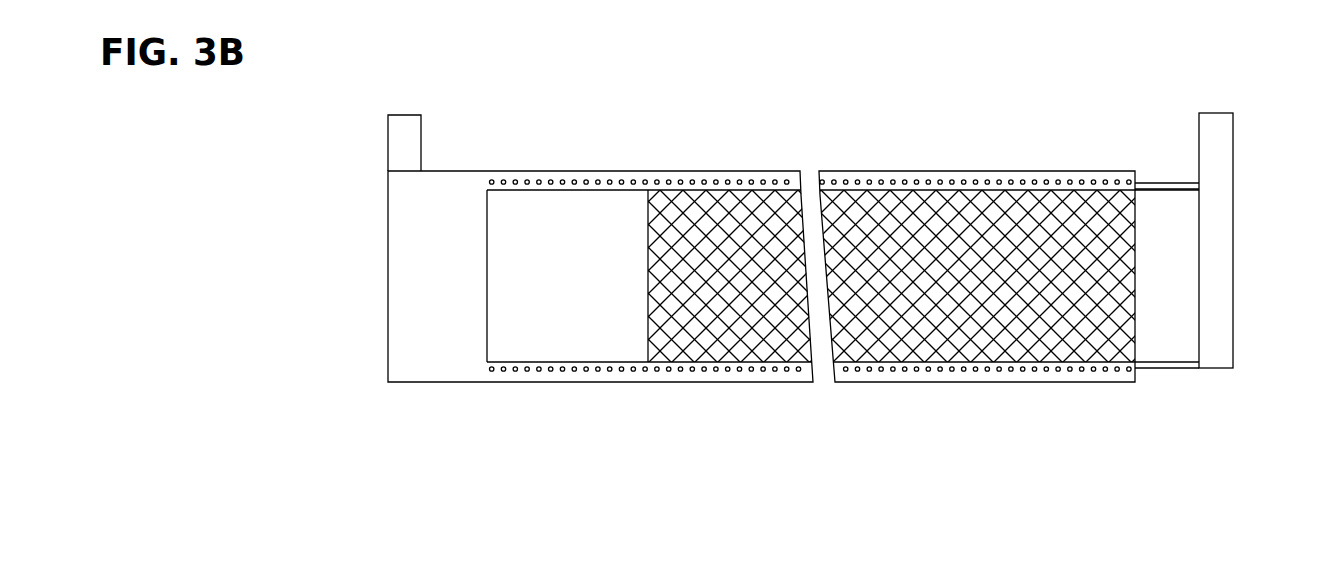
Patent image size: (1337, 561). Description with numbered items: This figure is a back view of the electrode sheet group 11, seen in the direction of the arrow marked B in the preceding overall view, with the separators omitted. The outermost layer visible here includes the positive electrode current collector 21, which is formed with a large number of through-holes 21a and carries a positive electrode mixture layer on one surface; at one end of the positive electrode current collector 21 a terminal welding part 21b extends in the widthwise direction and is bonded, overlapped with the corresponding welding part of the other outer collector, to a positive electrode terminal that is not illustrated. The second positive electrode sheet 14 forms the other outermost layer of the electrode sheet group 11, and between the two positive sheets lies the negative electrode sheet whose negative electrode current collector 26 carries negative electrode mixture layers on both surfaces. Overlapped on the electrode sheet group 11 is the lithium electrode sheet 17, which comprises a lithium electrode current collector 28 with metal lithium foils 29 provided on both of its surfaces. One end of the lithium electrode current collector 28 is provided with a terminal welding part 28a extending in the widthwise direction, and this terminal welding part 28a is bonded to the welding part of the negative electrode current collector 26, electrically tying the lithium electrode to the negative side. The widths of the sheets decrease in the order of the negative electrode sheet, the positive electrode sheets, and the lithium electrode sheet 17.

The electrode sheet group 11 is at (337, 251).
The positive electrode sheet 14 is at (1181, 170).
The lithium electrode sheet 17 is at (476, 334).
The positive electrode current collector 21 is at (411, 298).
The through-holes 21a is at (895, 182).
The terminal welding part 21b is at (404, 137).
The negative electrode current collector 26 is at (1148, 182).
The lithium electrode current collector 28 is at (565, 212).
The terminal welding part 28a is at (1218, 160).
The metal lithium foils 29 is at (724, 222).